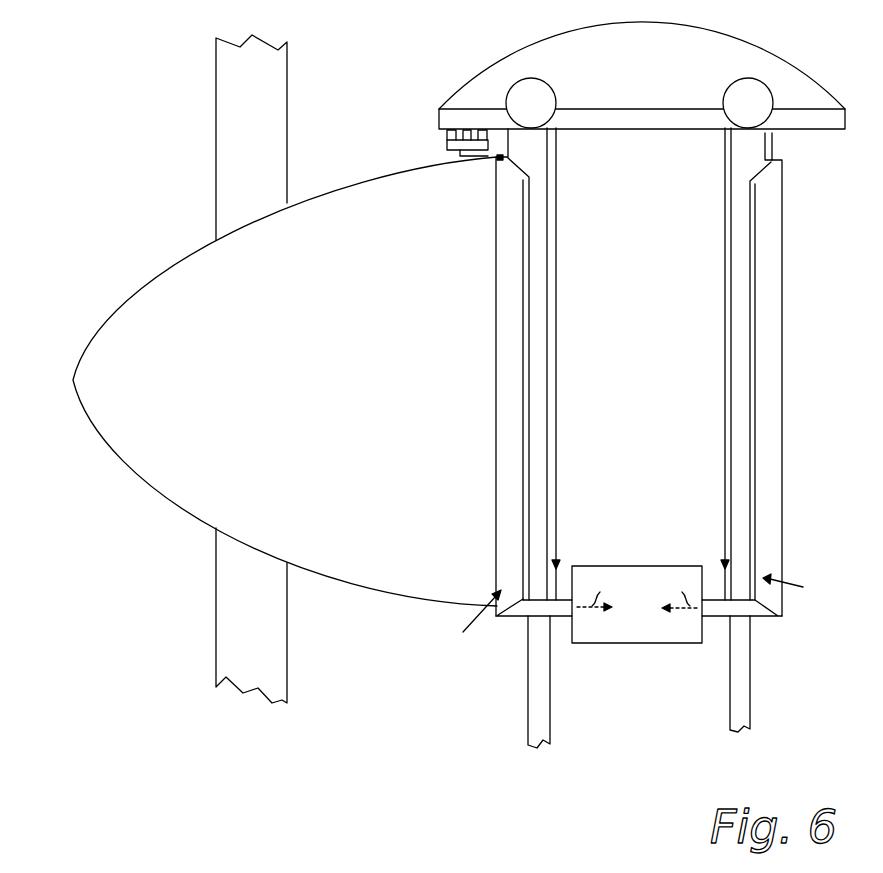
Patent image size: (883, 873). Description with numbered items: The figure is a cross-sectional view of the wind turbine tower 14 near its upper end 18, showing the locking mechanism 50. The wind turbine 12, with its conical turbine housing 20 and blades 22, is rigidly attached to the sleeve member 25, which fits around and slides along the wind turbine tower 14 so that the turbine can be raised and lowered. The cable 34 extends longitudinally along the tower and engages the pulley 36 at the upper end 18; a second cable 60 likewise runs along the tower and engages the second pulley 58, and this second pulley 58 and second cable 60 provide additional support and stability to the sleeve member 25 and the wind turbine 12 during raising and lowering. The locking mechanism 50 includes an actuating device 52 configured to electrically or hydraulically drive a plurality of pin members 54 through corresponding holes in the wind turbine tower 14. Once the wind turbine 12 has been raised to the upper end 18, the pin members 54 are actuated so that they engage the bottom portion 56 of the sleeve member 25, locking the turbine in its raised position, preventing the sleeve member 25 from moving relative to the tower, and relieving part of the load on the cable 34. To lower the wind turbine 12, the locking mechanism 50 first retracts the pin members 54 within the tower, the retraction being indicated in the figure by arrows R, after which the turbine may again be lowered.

The wind turbine 12 is at (106, 250).
The wind turbine tower 14 is at (756, 674).
The upper end 18 is at (770, 150).
The conical turbine housing 20 is at (160, 457).
The blades 22 is at (270, 98).
The sleeve member 25 is at (770, 355).
The cable 34 is at (556, 198).
The pulley 36 is at (533, 101).
The locking mechanism 50 is at (637, 553).
The actuating device 52 is at (660, 572).
The pin members 54 is at (557, 607).
The bottom portion 56 is at (635, 611).
The second pulley 58 is at (742, 95).
The second cable 60 is at (725, 178).